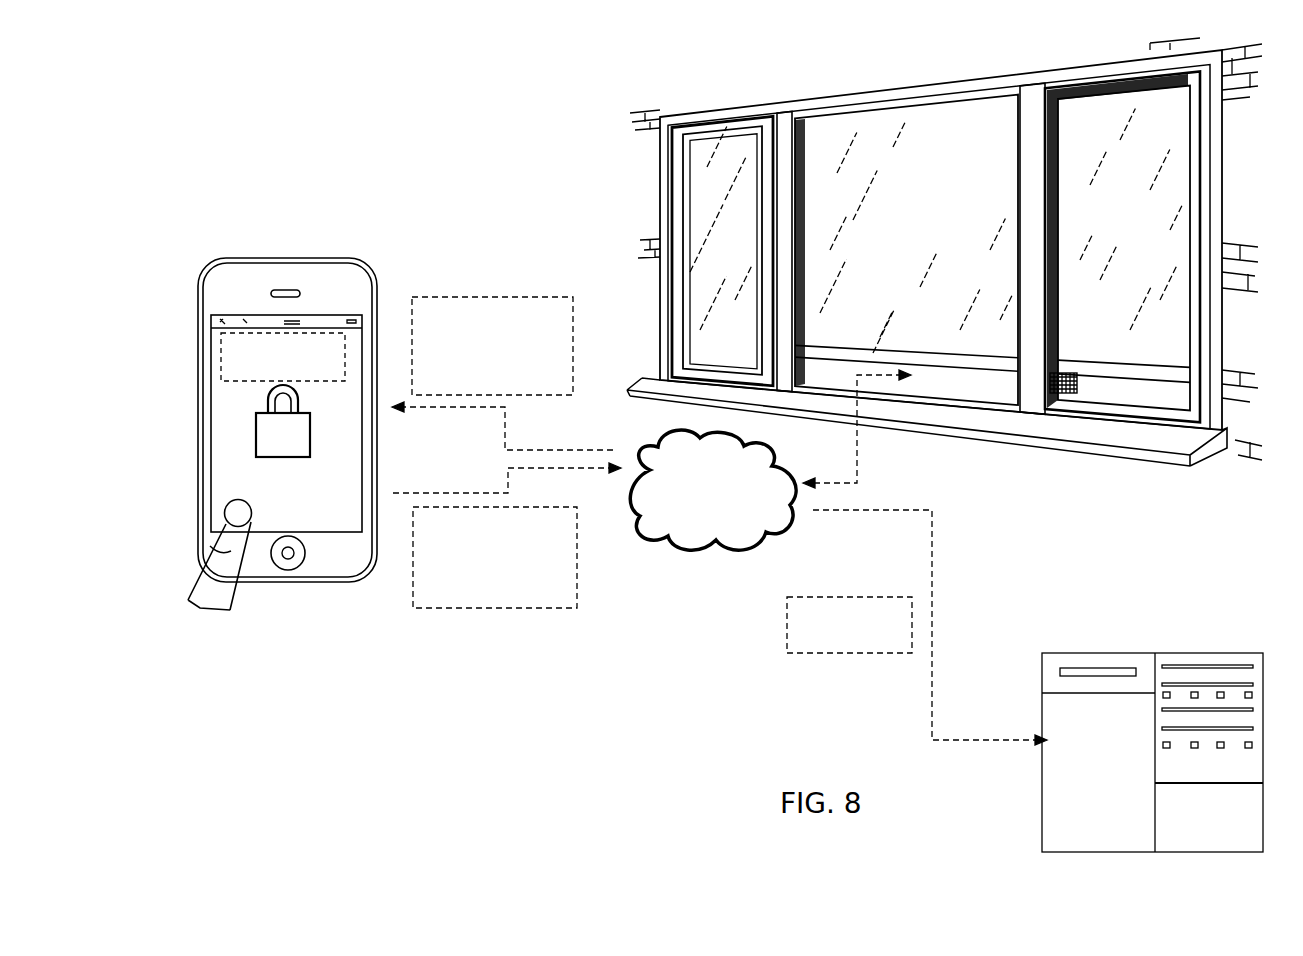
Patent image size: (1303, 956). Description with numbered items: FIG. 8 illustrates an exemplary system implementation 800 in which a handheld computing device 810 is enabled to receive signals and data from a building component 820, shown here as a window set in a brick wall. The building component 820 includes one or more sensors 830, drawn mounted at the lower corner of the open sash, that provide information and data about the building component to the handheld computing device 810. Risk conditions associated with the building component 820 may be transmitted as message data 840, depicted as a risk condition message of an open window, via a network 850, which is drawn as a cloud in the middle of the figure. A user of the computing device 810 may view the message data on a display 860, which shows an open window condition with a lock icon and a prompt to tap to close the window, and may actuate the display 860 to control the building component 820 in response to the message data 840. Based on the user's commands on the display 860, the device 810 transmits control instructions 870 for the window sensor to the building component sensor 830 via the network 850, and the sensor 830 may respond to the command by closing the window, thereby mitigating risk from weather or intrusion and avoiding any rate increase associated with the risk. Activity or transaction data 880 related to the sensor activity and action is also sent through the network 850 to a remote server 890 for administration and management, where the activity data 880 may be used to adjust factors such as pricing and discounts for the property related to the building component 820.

The system implementation 800 is at (367, 149).
The handheld computing device 810 is at (282, 434).
The building component 820 is at (1212, 467).
The sensor 830 is at (1068, 398).
The message data 840 is at (504, 373).
The network 850 is at (713, 490).
The display 860 is at (286, 423).
The control instructions 870 is at (507, 535).
The activity data 880 is at (849, 625).
The remote server 890 is at (1152, 752).